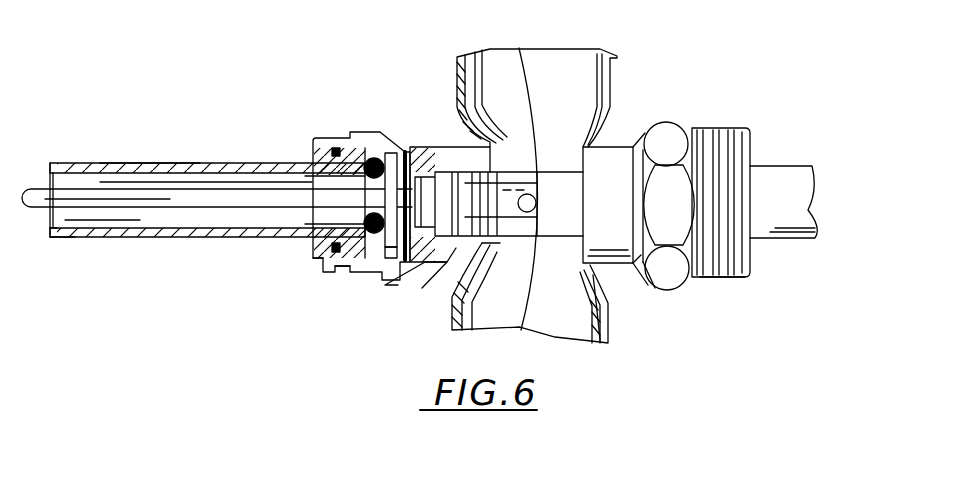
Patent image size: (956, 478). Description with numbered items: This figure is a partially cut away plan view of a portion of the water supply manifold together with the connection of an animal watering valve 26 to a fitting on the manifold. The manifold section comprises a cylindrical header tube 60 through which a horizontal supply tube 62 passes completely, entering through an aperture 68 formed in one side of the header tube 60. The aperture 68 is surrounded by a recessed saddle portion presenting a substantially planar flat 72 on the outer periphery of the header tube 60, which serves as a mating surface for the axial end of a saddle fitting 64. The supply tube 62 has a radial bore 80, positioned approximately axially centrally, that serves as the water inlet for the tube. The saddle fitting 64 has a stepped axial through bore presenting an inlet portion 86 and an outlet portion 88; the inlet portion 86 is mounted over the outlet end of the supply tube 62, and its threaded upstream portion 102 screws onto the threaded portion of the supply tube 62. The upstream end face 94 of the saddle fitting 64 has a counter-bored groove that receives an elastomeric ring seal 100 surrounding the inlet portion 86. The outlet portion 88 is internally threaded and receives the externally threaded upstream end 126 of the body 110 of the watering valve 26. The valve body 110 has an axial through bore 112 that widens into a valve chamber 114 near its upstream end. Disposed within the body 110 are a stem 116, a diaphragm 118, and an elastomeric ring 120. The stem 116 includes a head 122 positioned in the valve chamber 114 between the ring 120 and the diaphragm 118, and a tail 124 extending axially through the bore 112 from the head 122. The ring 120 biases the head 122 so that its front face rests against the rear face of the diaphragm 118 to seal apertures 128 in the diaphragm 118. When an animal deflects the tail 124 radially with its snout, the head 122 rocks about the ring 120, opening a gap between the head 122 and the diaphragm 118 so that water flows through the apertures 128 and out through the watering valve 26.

The animal watering valve 26 is at (141, 151).
The header tube 60 is at (616, 68).
The supply tube 62 is at (520, 154).
The saddle fitting 64 is at (720, 118).
The aperture 68 is at (505, 248).
The flat 72 is at (622, 142).
The radial bore 80 is at (533, 197).
The inlet portion 86 is at (646, 282).
The outlet portion 88 is at (736, 279).
The upstream end face 94 is at (596, 318).
The elastomeric ring seal 100 is at (514, 158).
The threaded upstream portion 102 is at (459, 173).
The body 110 is at (112, 162).
The axial through bore 112 is at (72, 236).
The valve chamber 114 is at (368, 160).
The stem 116 is at (81, 182).
The diaphragm 118 is at (390, 152).
The elastomeric ring 120 is at (368, 240).
The head 122 is at (385, 258).
The tail 124 is at (138, 202).
The upstream end 126 is at (332, 142).
The apertures 128 is at (399, 162).